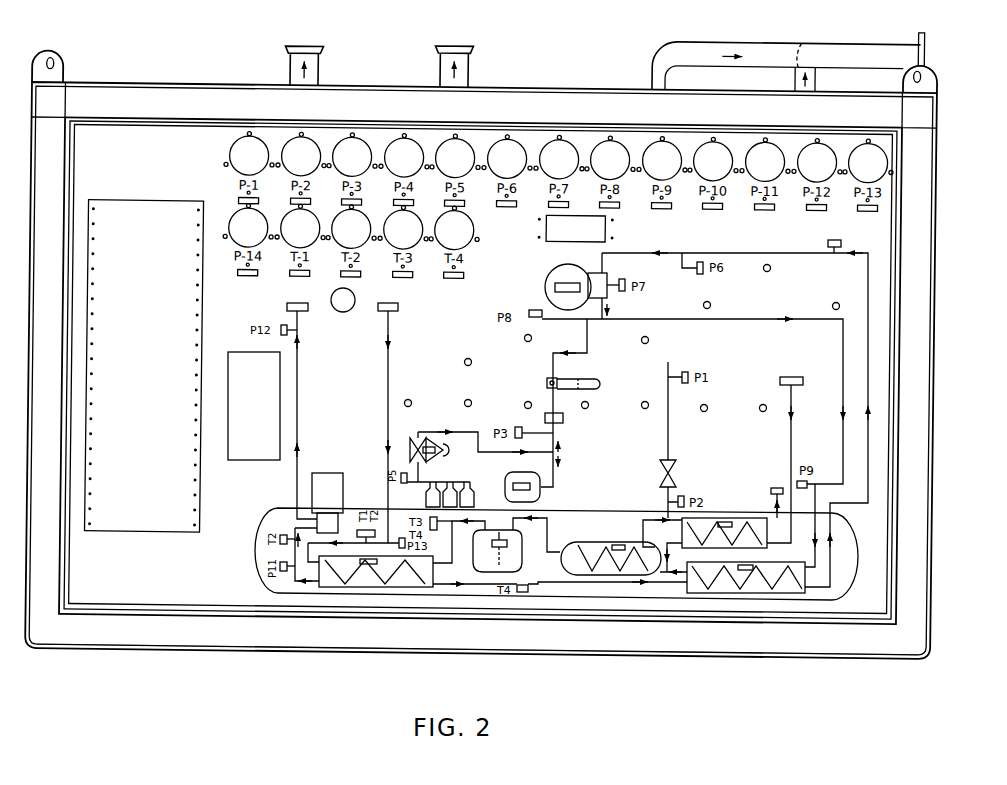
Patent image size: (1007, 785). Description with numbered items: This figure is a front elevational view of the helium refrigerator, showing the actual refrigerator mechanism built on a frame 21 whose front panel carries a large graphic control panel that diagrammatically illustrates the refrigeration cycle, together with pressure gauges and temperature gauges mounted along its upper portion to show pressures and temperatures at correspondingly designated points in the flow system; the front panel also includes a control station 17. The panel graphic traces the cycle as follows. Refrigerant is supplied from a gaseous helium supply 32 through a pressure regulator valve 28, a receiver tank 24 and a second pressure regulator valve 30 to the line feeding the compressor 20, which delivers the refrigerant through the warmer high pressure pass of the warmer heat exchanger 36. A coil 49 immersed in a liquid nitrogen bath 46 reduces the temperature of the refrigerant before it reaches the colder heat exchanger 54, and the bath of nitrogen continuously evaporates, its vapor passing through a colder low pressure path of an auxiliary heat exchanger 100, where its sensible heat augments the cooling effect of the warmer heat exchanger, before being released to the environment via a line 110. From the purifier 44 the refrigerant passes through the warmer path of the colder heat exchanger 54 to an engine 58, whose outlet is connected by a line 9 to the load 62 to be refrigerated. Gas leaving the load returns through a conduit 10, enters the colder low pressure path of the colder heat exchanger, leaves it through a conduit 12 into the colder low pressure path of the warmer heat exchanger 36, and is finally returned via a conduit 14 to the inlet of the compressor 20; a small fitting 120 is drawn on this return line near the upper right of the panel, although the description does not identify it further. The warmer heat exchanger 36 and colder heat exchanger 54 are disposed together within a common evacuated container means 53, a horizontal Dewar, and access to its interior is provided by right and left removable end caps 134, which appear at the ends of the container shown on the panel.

The line 9 is at (321, 63).
The conduit 10 is at (469, 63).
The conduit 12 is at (753, 640).
The conduit 14 is at (728, 43).
The control station 17 is at (273, 422).
The compressor 20 is at (545, 290).
The frame 21 is at (938, 213).
The receiver tank 24 is at (541, 492).
The pressure regulator valve 28 is at (437, 452).
The pressure regulator valve 30 is at (559, 391).
The gaseous helium supply 32 is at (426, 496).
The warmer heat exchanger 36 is at (721, 595).
The purifier 44 is at (488, 572).
The liquid nitrogen bath 46 is at (636, 548).
The coil 49 is at (593, 548).
The evacuated container means 53 is at (860, 545).
The colder heat exchanger 54 is at (383, 588).
The engine 58 is at (331, 496).
The load 62 is at (287, 305).
The auxiliary heat exchanger 100 is at (757, 525).
The line 110 is at (816, 80).
The sensor 120 is at (838, 250).
The removable end caps 134 is at (258, 578).